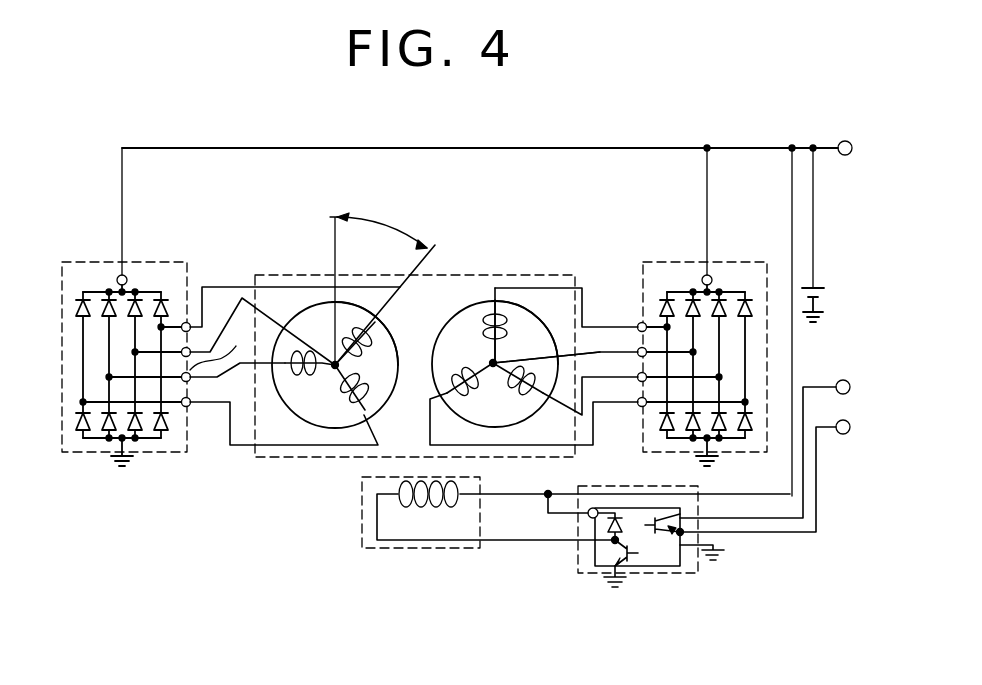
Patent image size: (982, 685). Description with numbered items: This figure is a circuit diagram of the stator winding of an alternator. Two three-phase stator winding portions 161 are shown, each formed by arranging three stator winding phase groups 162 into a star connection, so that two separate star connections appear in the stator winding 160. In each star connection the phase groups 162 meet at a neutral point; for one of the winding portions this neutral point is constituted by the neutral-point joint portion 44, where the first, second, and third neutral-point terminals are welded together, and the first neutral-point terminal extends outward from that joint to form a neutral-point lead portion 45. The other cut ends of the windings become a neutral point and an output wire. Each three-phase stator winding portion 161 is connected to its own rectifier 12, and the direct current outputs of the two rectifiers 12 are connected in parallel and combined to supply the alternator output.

The rectifier 12 is at (158, 260).
The motor generator 160 is at (466, 274).
The three-phase stator winding portion 161 is at (331, 428).
The stator winding phase group 162 is at (292, 374).
The neutral-point joint portion 44 is at (492, 362).
The neutral-point lead portion 45 is at (600, 350).